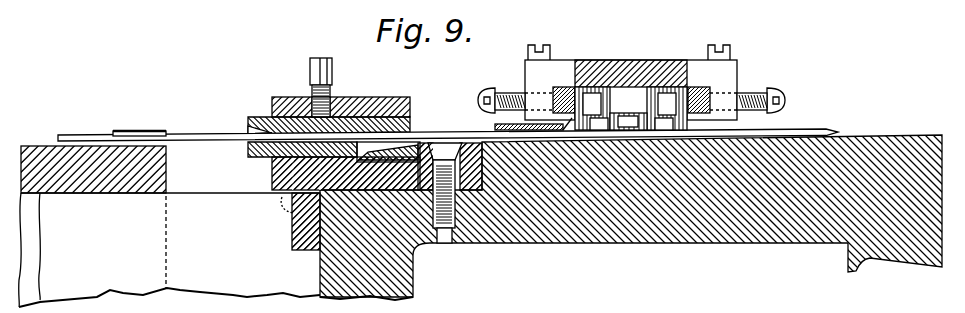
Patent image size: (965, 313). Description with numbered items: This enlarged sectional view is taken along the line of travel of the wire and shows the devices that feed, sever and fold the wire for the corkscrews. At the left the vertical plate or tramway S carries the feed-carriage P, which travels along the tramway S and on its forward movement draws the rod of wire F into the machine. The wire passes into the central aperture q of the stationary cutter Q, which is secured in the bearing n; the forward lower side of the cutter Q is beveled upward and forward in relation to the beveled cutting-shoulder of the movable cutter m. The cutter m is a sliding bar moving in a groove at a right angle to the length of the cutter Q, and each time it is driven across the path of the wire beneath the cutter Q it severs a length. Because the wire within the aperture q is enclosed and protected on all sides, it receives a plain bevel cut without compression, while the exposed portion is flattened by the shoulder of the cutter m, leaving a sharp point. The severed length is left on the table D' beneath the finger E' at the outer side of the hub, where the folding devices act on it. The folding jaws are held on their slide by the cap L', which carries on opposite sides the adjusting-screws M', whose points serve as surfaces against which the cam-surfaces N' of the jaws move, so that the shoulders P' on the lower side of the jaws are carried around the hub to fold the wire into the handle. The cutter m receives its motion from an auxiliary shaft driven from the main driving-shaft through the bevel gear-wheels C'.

The tramway S is at (169, 250).
The feed-carriage P is at (482, 156).
The feed bar F is at (448, 129).
The cutter Q is at (482, 120).
The central aperture q is at (248, 142).
The bearing n is at (482, 140).
The movable cutter m is at (388, 152).
The table D' is at (482, 156).
The finger E' is at (641, 80).
The cap L' is at (482, 140).
The adjusting-screws M' is at (631, 96).
The cam-surfaces N' is at (641, 80).
The bevel gear-wheels C' is at (631, 108).
The shoulders P' is at (631, 124).